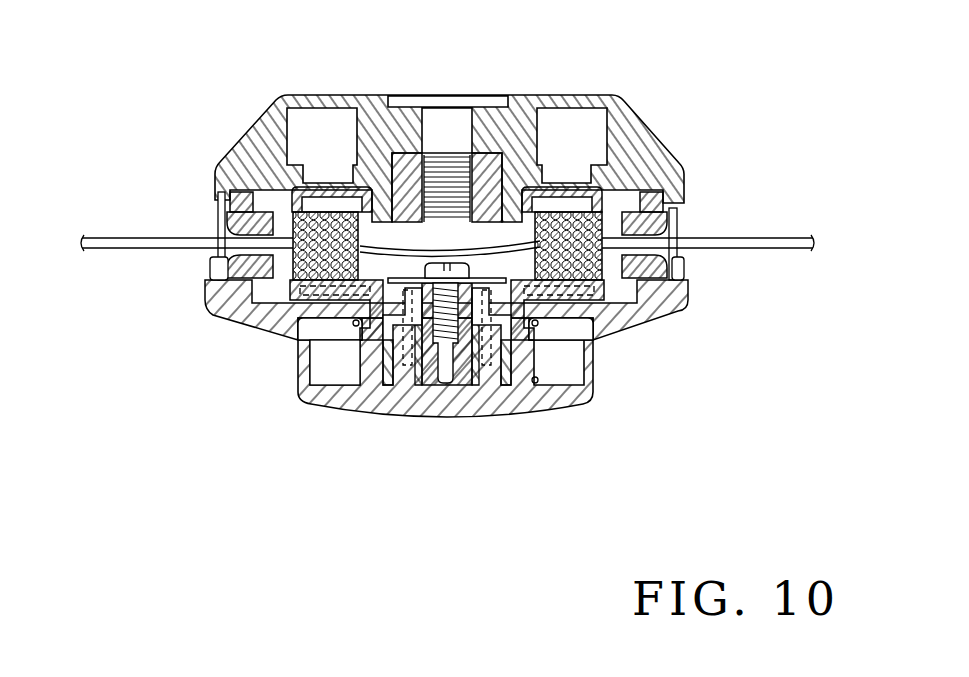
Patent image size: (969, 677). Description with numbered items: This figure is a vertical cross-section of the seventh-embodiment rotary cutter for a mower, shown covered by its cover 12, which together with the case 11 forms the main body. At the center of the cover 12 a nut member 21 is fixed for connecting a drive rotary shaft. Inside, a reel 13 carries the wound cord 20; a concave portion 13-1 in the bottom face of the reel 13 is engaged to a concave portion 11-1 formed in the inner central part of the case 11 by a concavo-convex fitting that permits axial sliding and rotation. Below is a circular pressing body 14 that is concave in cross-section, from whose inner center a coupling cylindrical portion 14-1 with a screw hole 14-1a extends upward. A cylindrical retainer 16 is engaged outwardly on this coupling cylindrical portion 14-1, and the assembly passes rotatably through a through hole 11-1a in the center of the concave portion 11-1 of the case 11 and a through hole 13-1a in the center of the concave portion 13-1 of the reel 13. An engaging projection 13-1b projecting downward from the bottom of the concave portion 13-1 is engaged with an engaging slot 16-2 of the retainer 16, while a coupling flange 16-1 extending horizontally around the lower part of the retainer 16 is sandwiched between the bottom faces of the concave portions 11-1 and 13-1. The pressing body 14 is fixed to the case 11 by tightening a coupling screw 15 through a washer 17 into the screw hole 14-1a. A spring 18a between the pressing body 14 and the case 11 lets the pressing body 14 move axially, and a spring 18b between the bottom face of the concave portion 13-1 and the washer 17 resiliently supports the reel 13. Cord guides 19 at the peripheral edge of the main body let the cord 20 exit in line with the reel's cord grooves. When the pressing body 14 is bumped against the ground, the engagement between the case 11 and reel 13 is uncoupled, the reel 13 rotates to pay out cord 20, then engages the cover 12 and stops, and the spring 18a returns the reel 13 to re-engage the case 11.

The case 11 is at (248, 320).
The concave portion of the case 11-1 is at (527, 337).
The through hole of the case 11-1a is at (385, 388).
The cover 12 is at (522, 108).
The reel 13 is at (296, 205).
The concave portion of the reel 13-1 is at (355, 345).
The through hole of the reel 13-1a is at (477, 345).
The engaging projection 13-1b is at (418, 345).
The pressing body 14 is at (342, 406).
The coupling cylindrical portion 14-1 is at (462, 375).
The screw hole 14-1a is at (448, 385).
The coupling screw 15 is at (459, 157).
The retainer 16 is at (405, 330).
The coupling flange 16-1 is at (514, 345).
The engaging slot 16-2 is at (490, 372).
The washer 17 is at (388, 172).
The spring 18a is at (345, 372).
The spring 18b is at (380, 395).
The cord guide 19 is at (243, 223).
The cord 20 is at (766, 236).
The nut member 21 is at (385, 250).